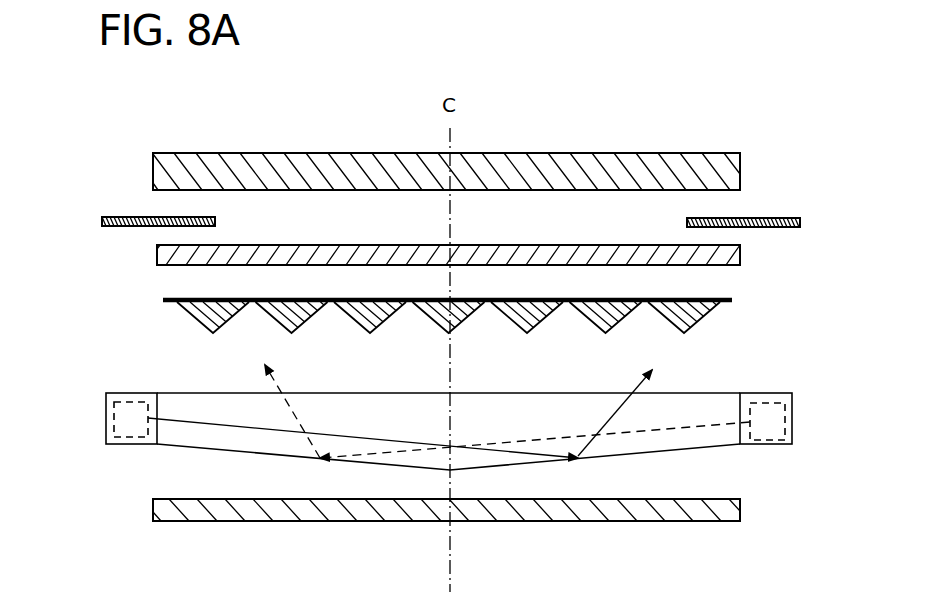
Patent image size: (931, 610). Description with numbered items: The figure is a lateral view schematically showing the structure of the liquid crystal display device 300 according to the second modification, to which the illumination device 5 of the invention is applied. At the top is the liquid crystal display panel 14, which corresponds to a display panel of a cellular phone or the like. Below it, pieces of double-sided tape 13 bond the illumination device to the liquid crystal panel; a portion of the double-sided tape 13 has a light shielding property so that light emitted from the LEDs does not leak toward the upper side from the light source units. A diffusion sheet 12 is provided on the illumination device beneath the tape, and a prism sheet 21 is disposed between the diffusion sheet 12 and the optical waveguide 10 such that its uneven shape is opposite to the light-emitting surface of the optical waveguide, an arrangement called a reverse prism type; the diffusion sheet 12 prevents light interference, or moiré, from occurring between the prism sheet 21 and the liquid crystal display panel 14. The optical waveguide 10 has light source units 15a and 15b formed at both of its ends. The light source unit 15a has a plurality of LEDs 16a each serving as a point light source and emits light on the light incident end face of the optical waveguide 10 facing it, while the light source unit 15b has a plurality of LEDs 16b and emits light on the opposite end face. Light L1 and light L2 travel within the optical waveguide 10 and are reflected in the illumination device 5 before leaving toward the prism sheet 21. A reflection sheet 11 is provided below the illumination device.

The liquid crystal display device 300 is at (472, 47).
The liquid crystal display panel 14 is at (727, 153).
The double-sided tape 13 is at (122, 212).
The diffusion sheet 12 is at (743, 258).
The prism sheet 21 is at (705, 323).
The illumination device 5 is at (461, 413).
The optical waveguide 10 is at (690, 453).
The light source unit 15a is at (106, 417).
The LED 16a is at (127, 436).
The light source unit 15b is at (793, 395).
The LED 16b is at (792, 430).
The light L1 is at (507, 405).
The light L2 is at (419, 408).
The reflection sheet 11 is at (707, 523).